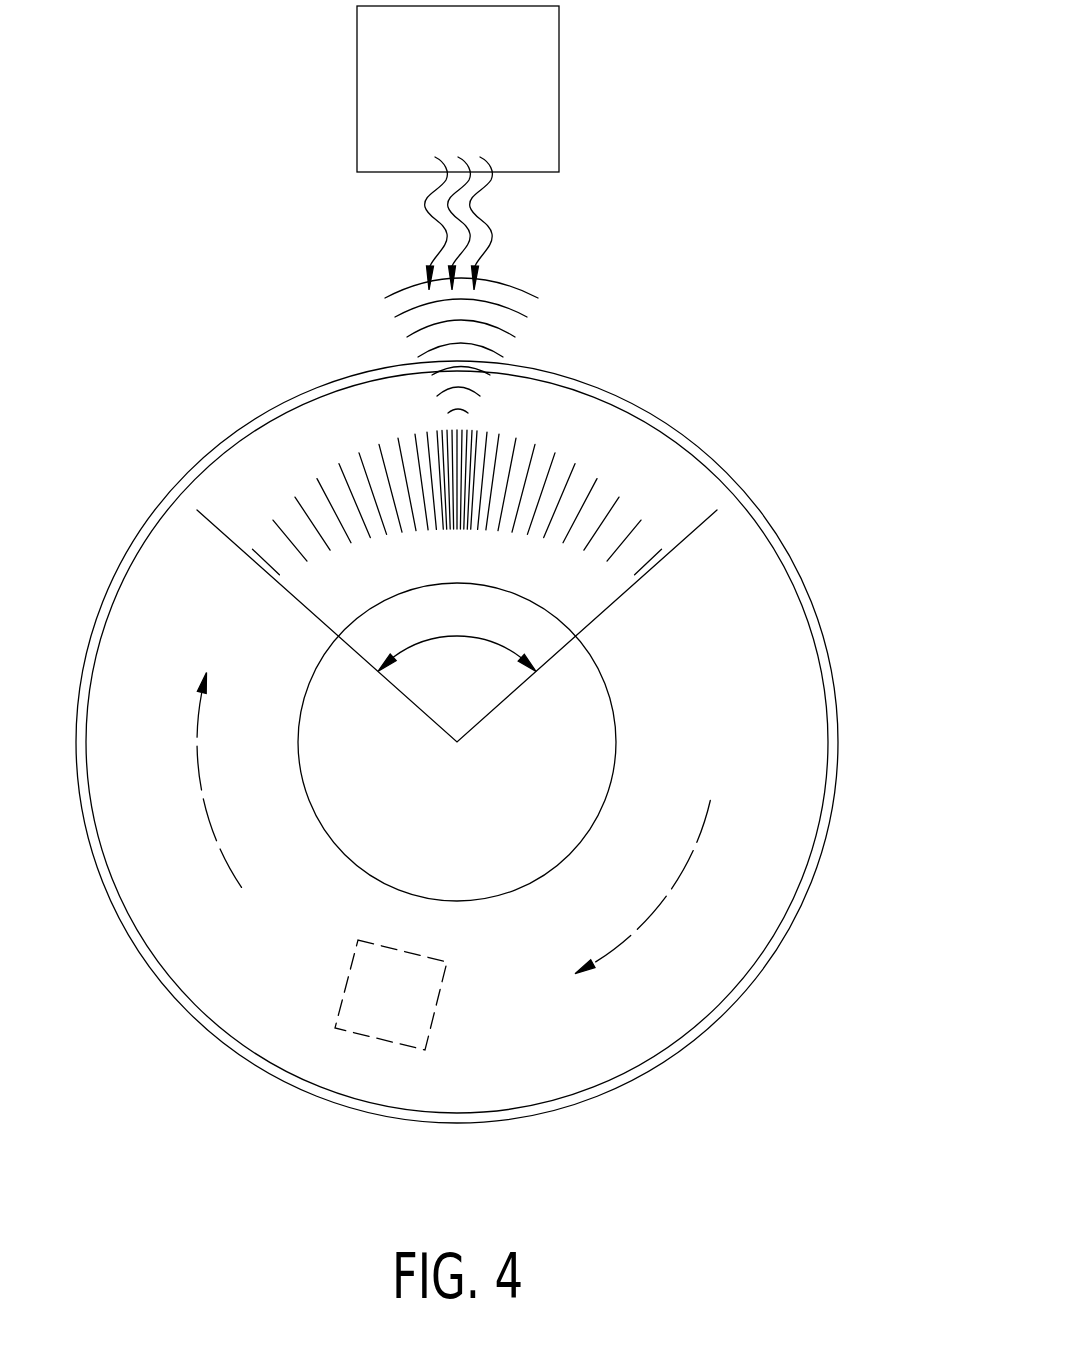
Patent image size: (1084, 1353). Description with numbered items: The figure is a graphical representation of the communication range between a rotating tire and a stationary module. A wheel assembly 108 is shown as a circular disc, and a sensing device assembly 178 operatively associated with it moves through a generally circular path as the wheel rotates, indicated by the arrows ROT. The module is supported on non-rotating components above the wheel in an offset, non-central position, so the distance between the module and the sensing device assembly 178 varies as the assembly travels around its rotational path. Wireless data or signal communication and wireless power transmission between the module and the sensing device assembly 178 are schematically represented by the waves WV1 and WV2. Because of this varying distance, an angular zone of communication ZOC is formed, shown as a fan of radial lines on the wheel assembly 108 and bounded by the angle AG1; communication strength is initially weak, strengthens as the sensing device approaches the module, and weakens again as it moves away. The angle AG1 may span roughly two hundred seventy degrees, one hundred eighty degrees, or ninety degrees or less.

The waves WV1 is at (525, 215).
The waves WV2 is at (560, 332).
The wheel assembly 108 is at (800, 540).
The angular zone of communication ZOC is at (366, 440).
The angle AG1 is at (465, 638).
The arrows ROT is at (203, 803).
The sensing device assembly 178 is at (378, 1052).